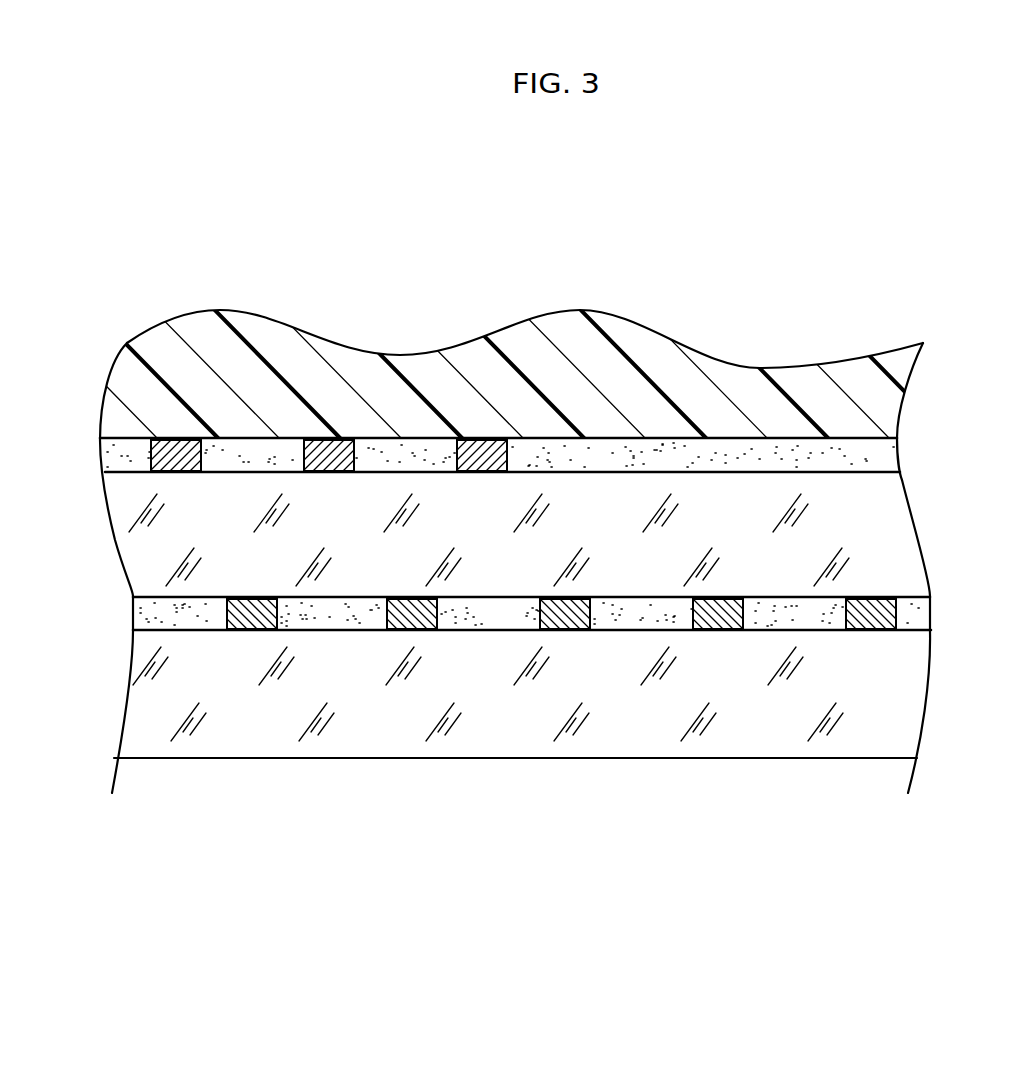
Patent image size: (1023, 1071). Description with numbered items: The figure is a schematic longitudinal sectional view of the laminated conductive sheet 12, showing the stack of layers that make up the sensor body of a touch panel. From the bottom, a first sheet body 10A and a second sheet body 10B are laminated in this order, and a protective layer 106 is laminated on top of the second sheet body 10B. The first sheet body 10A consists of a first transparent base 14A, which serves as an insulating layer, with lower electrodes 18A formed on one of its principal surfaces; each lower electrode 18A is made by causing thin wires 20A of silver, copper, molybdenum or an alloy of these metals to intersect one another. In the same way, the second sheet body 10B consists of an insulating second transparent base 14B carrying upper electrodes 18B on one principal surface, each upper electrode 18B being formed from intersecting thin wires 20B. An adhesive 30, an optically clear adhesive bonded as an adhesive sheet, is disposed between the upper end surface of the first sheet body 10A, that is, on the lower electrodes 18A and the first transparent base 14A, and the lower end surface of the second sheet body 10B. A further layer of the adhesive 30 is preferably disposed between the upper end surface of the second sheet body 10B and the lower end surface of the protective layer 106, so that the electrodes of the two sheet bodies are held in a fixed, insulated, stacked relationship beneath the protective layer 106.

The protective layer 106 is at (790, 378).
The laminated conductive sheet 12 is at (99, 437).
The adhesive 30 is at (120, 455).
The second sheet body 10B is at (906, 456).
The first sheet body 10A is at (940, 613).
The second transparent base 14B is at (897, 543).
The first transparent base 14A is at (912, 698).
The thin wires 20B is at (329, 500).
The upper electrodes 18B is at (482, 472).
The thin wires 20A is at (561, 658).
The lower electrodes 18A is at (568, 631).